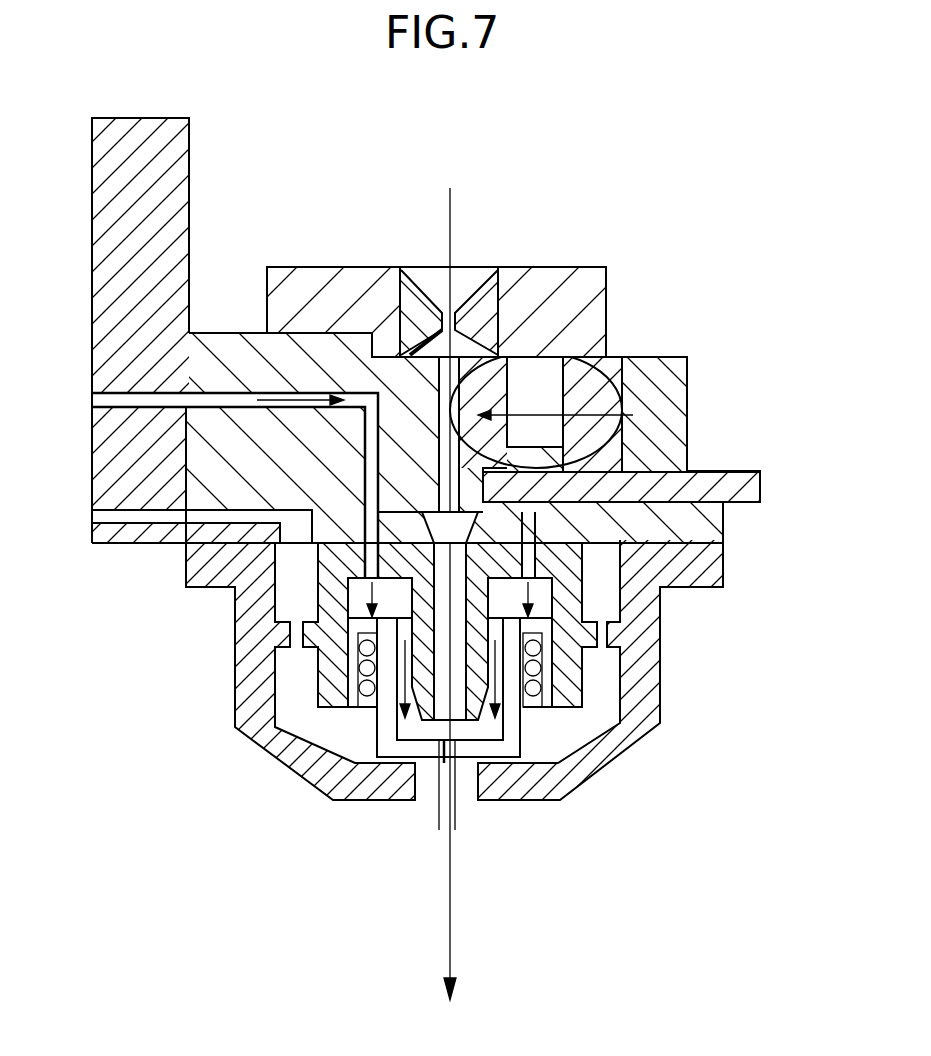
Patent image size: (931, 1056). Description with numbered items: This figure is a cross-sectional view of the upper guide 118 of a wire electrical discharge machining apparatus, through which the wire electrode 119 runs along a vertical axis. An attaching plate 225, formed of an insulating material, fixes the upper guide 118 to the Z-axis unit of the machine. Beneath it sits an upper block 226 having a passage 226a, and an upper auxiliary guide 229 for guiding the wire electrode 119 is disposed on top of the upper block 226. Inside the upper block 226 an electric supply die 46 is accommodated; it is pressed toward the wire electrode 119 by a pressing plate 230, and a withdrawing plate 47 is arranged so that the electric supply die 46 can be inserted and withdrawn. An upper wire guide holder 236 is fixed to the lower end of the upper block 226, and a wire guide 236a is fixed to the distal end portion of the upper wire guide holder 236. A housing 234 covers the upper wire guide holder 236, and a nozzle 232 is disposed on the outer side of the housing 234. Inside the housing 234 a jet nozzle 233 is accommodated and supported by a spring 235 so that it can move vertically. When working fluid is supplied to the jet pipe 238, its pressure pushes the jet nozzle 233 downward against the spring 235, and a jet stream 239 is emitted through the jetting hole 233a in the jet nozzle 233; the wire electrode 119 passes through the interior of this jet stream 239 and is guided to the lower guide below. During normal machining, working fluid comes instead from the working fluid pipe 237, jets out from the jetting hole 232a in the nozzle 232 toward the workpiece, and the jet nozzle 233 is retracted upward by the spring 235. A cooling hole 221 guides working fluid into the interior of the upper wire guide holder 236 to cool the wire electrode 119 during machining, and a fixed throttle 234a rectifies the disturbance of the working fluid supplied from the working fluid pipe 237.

The upper guide 118 is at (427, 204).
The wire electrode 119 is at (452, 237).
The attaching plate 225 is at (92, 465).
The upper block 226 is at (228, 340).
The passage 226a is at (445, 458).
The upper auxiliary guide 229 is at (606, 290).
The pressing plate 230 is at (687, 423).
The electric supply die 46 is at (600, 391).
The withdrawing plate 47 is at (762, 487).
The working fluid pipe 237 is at (105, 517).
The jet pipe 238 is at (92, 398).
The upper wire guide holder 236 is at (420, 603).
The wire guide 236a is at (377, 752).
The cooling hole 221 is at (578, 622).
The housing 234 is at (578, 660).
The fixed throttle 234a is at (470, 660).
The spring 235 is at (500, 690).
The jet nozzle 233 is at (507, 742).
The jetting hole 233a is at (443, 760).
The nozzle 232 is at (287, 758).
The jetting hole 232a is at (473, 790).
The jet stream 239 is at (452, 882).